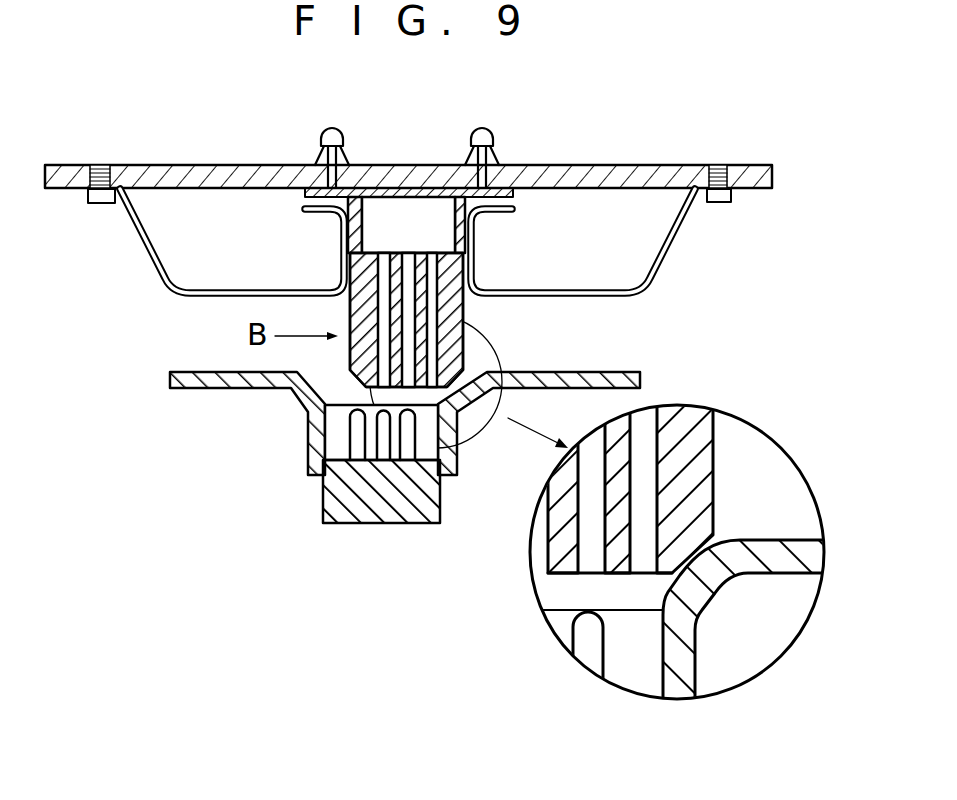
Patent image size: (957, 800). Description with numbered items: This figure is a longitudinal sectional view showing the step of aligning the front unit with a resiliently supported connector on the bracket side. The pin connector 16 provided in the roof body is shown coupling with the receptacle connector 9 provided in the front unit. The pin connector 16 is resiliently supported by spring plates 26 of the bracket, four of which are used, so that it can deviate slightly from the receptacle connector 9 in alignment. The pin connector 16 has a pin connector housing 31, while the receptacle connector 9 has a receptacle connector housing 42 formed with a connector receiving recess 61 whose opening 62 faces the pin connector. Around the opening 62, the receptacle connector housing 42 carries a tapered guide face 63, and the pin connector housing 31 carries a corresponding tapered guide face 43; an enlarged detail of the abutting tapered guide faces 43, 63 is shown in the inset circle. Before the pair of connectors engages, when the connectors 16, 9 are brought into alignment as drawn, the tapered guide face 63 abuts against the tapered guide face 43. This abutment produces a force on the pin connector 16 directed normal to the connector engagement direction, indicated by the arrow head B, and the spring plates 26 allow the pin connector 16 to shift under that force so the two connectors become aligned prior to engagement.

The receptacle connector 9 is at (463, 473).
The pin connector 16 is at (474, 352).
The spring plates 26 is at (325, 215).
The pin connector housing 31 is at (348, 319).
The receptacle connector housing 42 is at (457, 433).
The tapered guide face 43 is at (388, 379).
The connector receiving recess 61 is at (342, 445).
The opening 62 is at (333, 372).
The tapered guide face 63 is at (307, 401).